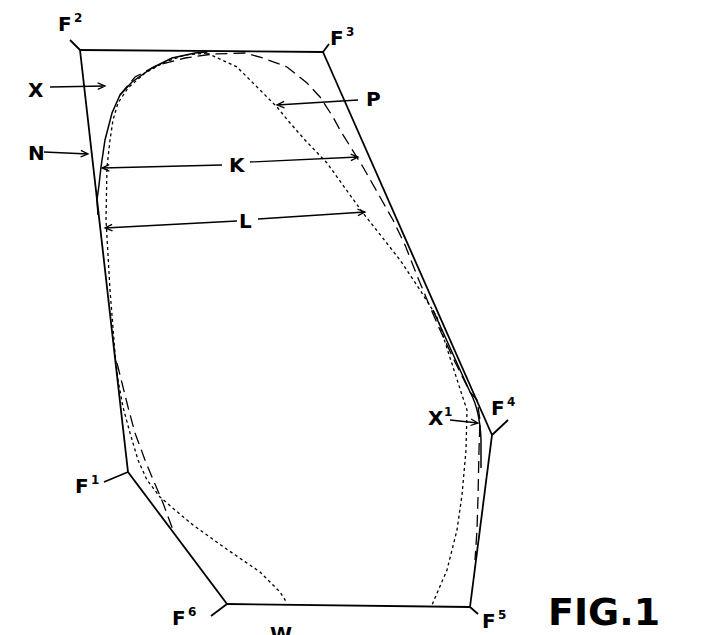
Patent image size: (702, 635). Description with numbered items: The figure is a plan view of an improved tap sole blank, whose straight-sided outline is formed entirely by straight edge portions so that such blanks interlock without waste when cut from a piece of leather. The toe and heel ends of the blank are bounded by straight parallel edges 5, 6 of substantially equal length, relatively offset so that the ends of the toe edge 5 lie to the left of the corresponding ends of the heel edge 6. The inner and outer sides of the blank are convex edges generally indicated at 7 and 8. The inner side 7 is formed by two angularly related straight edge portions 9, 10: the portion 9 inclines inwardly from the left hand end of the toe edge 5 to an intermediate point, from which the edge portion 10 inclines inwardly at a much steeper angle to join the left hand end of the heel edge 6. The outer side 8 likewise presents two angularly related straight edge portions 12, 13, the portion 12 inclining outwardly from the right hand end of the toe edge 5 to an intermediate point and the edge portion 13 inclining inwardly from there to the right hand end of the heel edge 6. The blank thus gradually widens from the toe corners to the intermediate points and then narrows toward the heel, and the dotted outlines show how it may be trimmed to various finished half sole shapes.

The toe edge 5 is at (150, 50).
The heel edge 6 is at (370, 606).
The inner side 7 is at (137, 506).
The outer side 8 is at (463, 355).
The edge portion 9 is at (97, 188).
The edge portion 10 is at (160, 520).
The edge portion 12 is at (382, 185).
The edge portion 13 is at (487, 480).